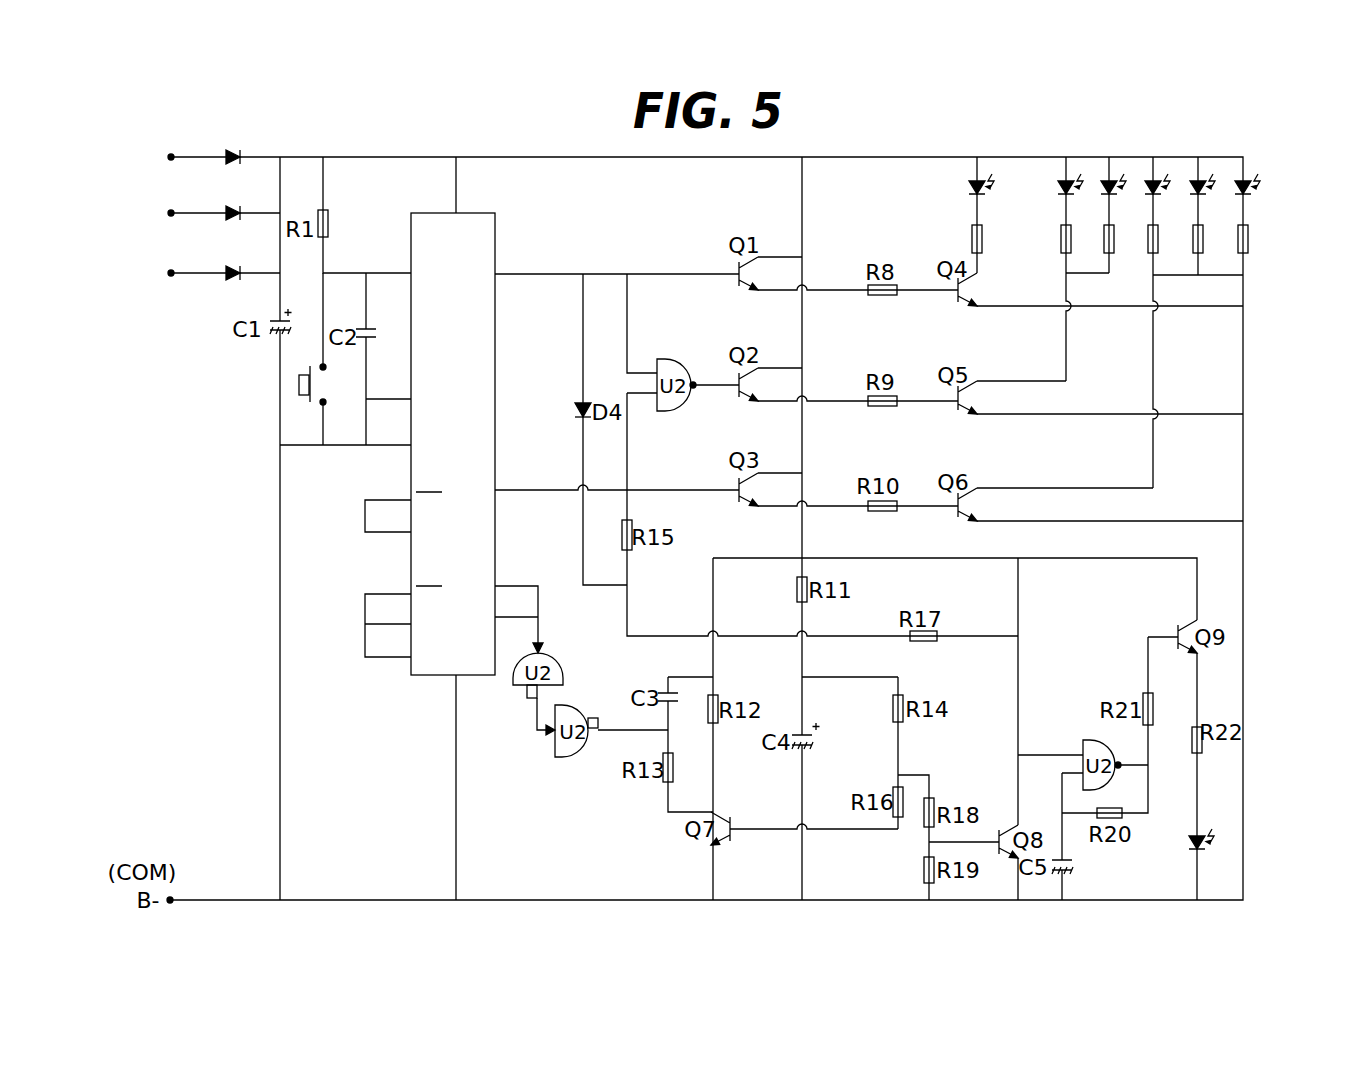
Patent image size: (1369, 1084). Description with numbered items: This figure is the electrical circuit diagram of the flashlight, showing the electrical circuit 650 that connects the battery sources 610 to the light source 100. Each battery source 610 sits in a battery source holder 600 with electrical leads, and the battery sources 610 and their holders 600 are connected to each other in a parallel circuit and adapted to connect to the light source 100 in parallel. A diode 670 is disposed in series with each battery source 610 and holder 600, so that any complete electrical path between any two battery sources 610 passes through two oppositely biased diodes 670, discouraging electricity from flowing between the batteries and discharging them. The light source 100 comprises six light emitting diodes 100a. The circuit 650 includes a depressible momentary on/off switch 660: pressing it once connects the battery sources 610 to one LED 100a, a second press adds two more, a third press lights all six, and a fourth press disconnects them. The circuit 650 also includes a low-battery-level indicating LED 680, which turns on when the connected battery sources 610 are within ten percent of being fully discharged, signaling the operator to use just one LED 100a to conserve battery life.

The battery source holder 600 is at (142, 142).
The battery source 610 is at (143, 288).
The diode 670 is at (227, 290).
The electrical circuit 650 is at (455, 136).
The on/off switch 660 is at (298, 388).
The light source 100 is at (1092, 284).
The light emitting diode 100a is at (1217, 190).
The low-battery-level indicating LED 680 is at (1218, 828).